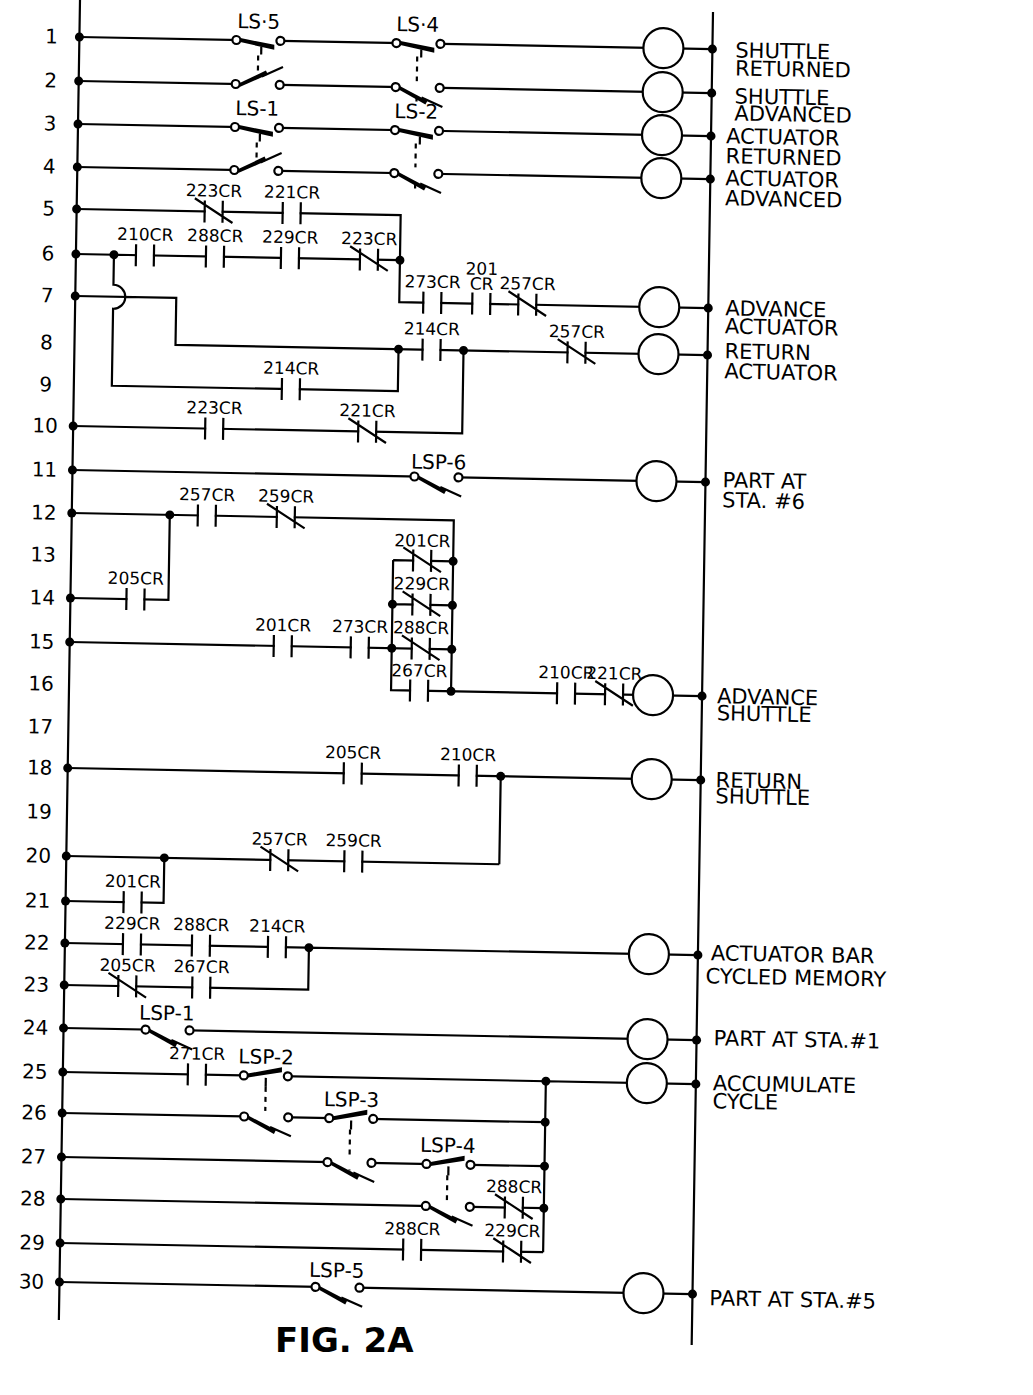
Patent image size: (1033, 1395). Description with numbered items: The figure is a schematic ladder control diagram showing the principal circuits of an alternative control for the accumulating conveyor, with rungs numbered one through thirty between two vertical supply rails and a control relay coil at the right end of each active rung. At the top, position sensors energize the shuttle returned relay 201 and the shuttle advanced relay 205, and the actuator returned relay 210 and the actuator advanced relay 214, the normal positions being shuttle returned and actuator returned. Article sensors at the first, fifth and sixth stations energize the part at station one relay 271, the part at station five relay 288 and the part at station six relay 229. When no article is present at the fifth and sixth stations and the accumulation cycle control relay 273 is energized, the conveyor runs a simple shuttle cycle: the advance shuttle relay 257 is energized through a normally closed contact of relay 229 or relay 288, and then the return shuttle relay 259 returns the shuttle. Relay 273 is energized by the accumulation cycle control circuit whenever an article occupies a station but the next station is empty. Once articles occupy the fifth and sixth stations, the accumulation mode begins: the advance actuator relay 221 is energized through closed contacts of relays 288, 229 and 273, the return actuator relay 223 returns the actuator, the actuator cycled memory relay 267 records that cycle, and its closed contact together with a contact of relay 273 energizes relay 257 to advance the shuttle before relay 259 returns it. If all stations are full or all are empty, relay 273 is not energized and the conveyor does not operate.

The shuttle returned control relay 201 is at (663, 48).
The shuttle advanced control relay 205 is at (662, 92).
The actuator returned control relay 210 is at (662, 135).
The actuator advanced control relay 214 is at (661, 178).
The advance actuator control relay 221 is at (659, 307).
The return actuator control relay 223 is at (658, 354).
The part at station six control relay 229 is at (656, 481).
The advance shuttle control relay 257 is at (653, 695).
The return shuttle control relay 259 is at (651, 779).
The actuator cycled memory control relay 267 is at (649, 954).
The part at station one control relay 271 is at (647, 1039).
The accumulation cycle control relay 273 is at (647, 1083).
The part at station five control relay 288 is at (643, 1293).